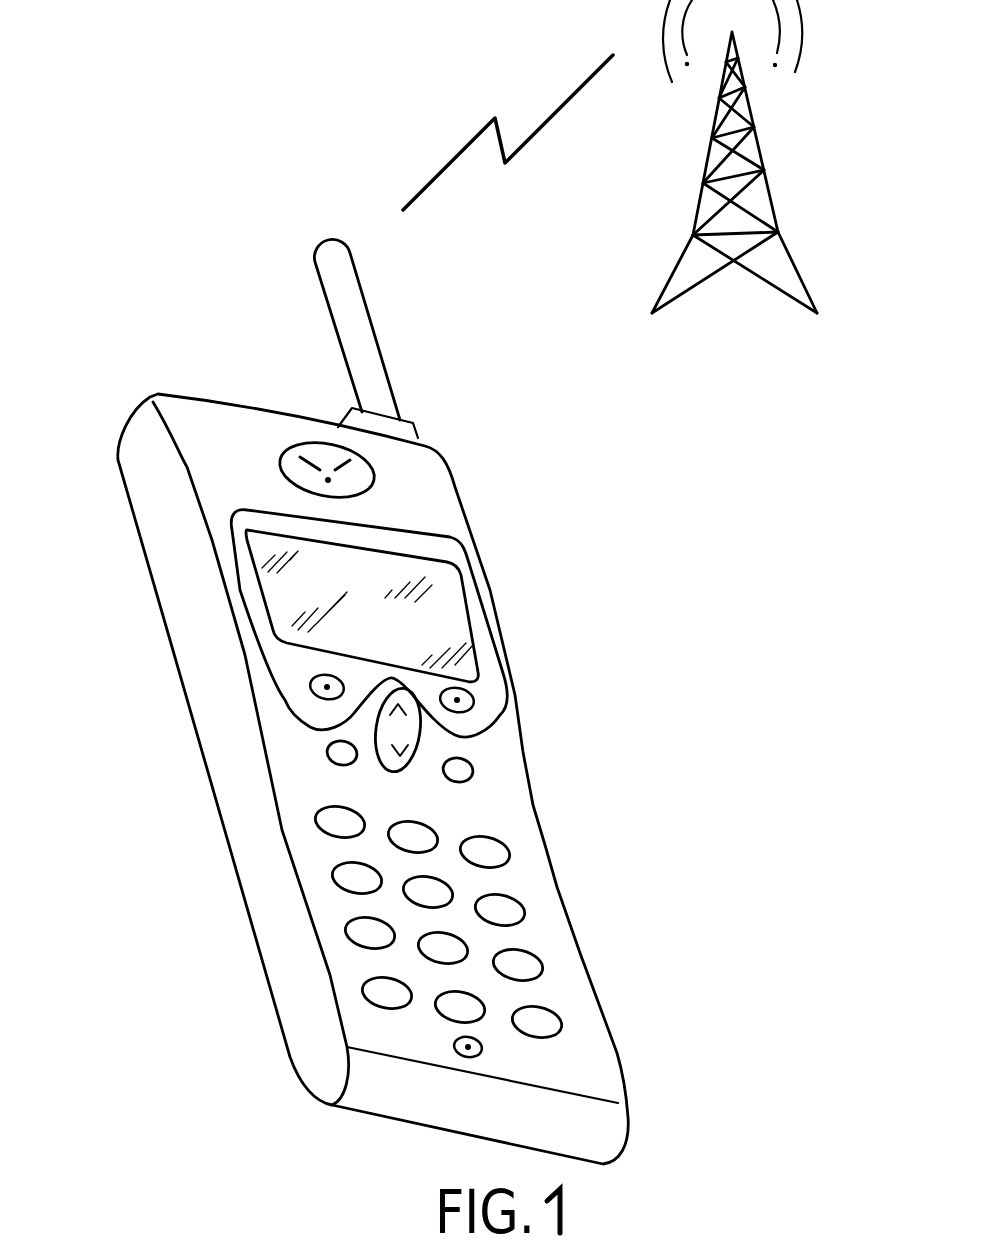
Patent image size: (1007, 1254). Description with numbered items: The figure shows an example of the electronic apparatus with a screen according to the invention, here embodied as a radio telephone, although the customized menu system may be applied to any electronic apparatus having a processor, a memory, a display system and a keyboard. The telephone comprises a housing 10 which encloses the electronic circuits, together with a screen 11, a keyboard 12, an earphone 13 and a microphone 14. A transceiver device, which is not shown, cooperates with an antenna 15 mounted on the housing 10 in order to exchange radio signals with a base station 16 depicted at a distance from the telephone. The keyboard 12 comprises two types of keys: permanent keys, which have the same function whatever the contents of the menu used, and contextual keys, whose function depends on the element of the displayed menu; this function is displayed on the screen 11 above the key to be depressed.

The housing 10 is at (148, 377).
The screen 11 is at (442, 617).
The keyboard 12 is at (507, 820).
The earphone 13 is at (318, 437).
The microphone 14 is at (420, 1040).
The antenna 15 is at (368, 278).
The base station 16 is at (790, 137).